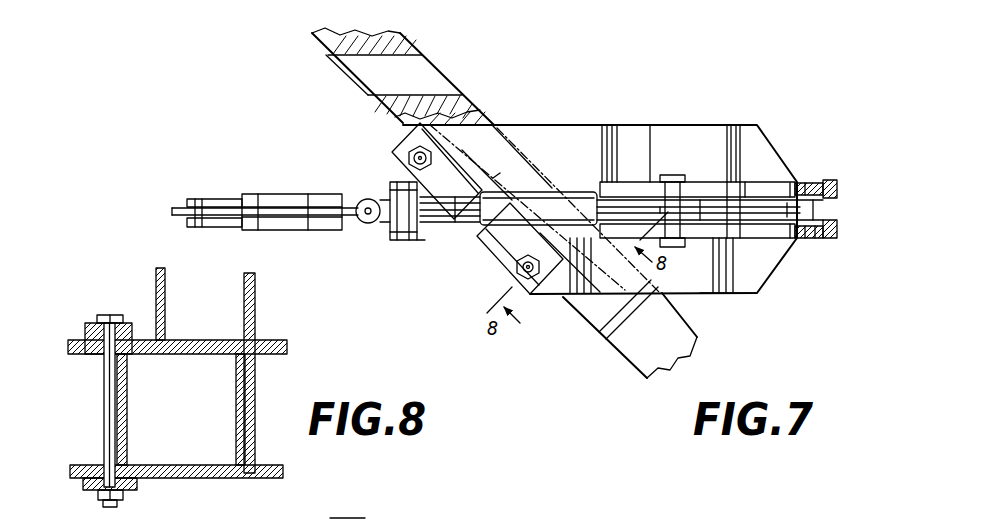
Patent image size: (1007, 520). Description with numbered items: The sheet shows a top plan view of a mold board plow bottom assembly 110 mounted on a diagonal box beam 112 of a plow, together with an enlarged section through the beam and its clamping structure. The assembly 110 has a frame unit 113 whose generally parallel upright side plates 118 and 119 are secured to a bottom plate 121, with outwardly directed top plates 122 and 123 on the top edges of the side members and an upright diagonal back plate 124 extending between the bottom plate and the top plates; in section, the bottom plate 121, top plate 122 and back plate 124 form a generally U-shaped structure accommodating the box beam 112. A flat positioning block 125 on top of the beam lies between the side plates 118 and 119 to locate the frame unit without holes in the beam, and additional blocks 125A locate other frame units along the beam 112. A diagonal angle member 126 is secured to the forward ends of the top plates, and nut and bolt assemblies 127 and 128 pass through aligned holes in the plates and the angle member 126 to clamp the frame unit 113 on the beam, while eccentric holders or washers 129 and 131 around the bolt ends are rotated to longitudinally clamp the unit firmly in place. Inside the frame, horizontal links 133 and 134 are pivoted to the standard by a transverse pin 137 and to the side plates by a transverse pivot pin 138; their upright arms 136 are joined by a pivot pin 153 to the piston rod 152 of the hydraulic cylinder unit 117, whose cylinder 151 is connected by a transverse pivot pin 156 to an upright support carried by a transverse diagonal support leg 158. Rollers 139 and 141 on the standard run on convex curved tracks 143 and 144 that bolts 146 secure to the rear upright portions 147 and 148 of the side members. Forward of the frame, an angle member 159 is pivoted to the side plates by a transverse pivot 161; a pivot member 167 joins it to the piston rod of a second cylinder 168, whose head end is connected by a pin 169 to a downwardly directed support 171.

In FIG. 7, the mold board plow bottom assembly 110 is at (583, 86).
In FIG. 7, the diagonal box beam 112 is at (312, 37).
In FIG. 8, the diagonal box beam 112 is at (251, 384).
In FIG. 7, the frame unit 113 is at (719, 122).
In FIG. 7, the hydraulic cylinder unit 117 is at (580, 182).
In FIG. 7, the side plate 118 is at (775, 238).
In FIG. 7, the side plate 119 is at (803, 172).
In FIG. 7, the bottom plate 121 is at (740, 285).
In FIG. 8, the bottom plate 121 is at (201, 478).
In FIG. 7, the top plate 122 is at (677, 265).
In FIG. 8, the top plate 122 is at (190, 340).
In FIG. 7, the top plate 123 is at (650, 140).
In FIG. 7, the diagonal back plate 124 is at (492, 123).
In FIG. 8, the diagonal back plate 124 is at (250, 410).
In FIG. 7, the positioning block 125 is at (509, 170).
In FIG. 7, the additional blocks 125A is at (397, 67).
In FIG. 8, the diagonal angle member 126 is at (165, 283).
In FIG. 7, the nut and bolt assembly 127 is at (513, 260).
In FIG. 8, the nut and bolt assembly 127 is at (110, 418).
In FIG. 7, the nut and bolt assembly 128 is at (393, 140).
In FIG. 8, the eccentric holder 129 is at (102, 354).
In FIG. 8, the eccentric holder 131 is at (98, 468).
In FIG. 7, the horizontal link 133 is at (710, 240).
In FIG. 7, the horizontal link 134 is at (690, 198).
In FIG. 7, the upright arm 136 is at (735, 198).
In FIG. 7, the transverse pin 137 is at (783, 172).
In FIG. 7, the transverse pivot pin 138 is at (683, 140).
In FIG. 7, the roller 139 is at (820, 238).
In FIG. 7, the roller 141 is at (813, 186).
In FIG. 7, the convex curved track 143 is at (838, 227).
In FIG. 7, the convex curved track 144 is at (838, 190).
In FIG. 7, the bolts 146 is at (838, 240).
In FIG. 7, the rear upright portion 147 is at (803, 239).
In FIG. 7, the rear upright portion 148 is at (822, 172).
In FIG. 7, the cylinder 151 is at (435, 507).
In FIG. 7, the piston rod 152 is at (626, 205).
In FIG. 7, the pivot pin 153 is at (740, 165).
In FIG. 7, the transverse pivot pin 156 is at (355, 517).
In FIG. 7, the transverse diagonal support leg 158 is at (532, 150).
In FIG. 7, the angle member 159 is at (366, 225).
In FIG. 7, the transverse pivot 161 is at (396, 240).
In FIG. 7, the pivot member 167 is at (423, 226).
In FIG. 7, the cylinder 168 is at (275, 194).
In FIG. 7, the pin 169 is at (198, 199).
In FIG. 7, the downwardly directed support 171 is at (222, 208).